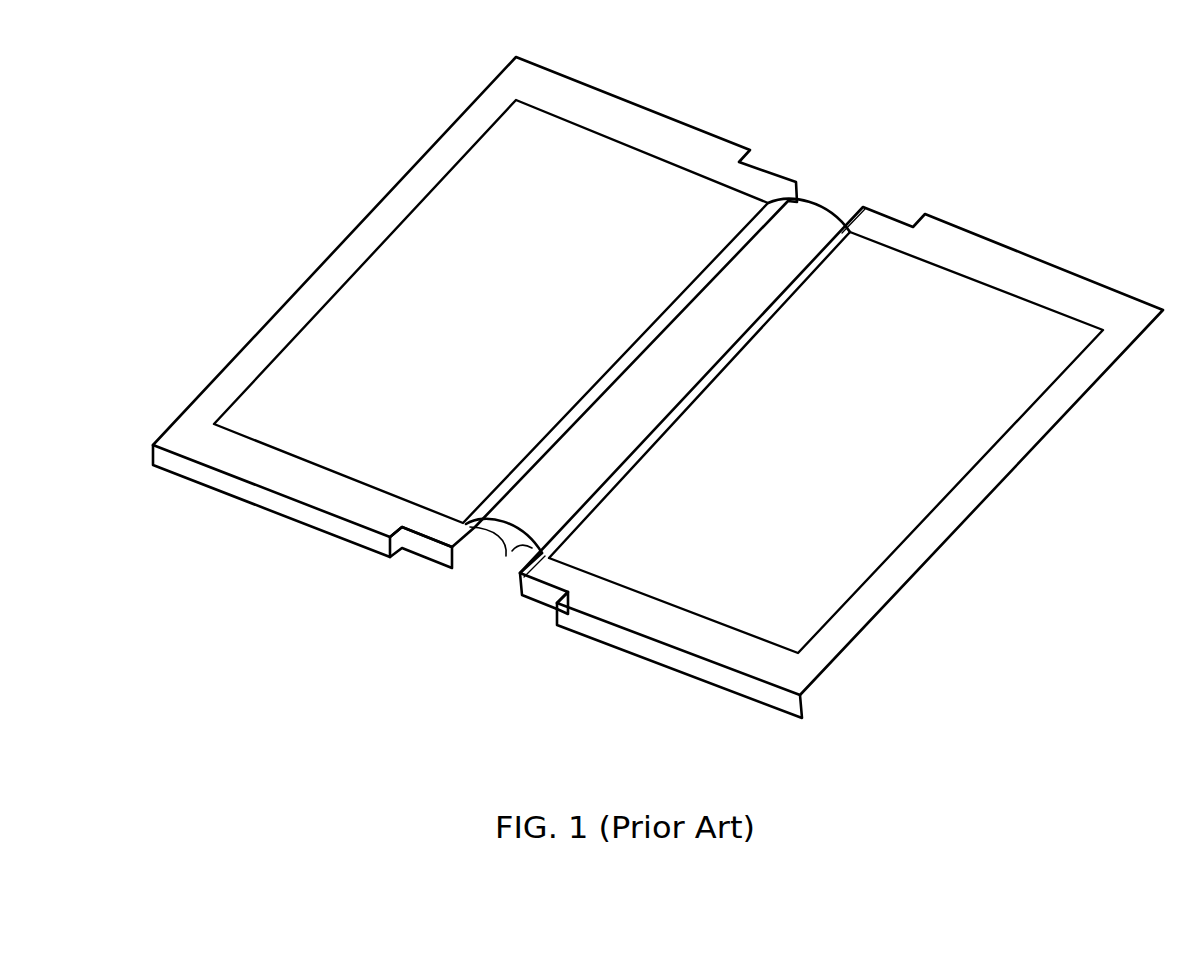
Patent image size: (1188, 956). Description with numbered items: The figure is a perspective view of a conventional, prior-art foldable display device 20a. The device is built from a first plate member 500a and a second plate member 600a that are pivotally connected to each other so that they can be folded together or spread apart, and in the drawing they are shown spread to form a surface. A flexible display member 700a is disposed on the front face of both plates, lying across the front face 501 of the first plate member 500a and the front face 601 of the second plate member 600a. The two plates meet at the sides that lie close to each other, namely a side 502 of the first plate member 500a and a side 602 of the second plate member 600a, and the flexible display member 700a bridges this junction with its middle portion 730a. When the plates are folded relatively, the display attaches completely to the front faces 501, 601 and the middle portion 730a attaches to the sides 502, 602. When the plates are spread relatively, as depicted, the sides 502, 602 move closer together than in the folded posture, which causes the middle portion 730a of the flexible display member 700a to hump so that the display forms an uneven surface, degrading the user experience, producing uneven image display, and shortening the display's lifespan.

The foldable display device 20a is at (603, 738).
The first plate member 500a is at (353, 495).
The front face of the first plate member 501 is at (388, 515).
The side of the first plate member 502 is at (500, 537).
The second plate member 600a is at (670, 622).
The front face of the second plate member 601 is at (600, 606).
The side of the second plate member 602 is at (525, 547).
The flexible display member 700a is at (655, 185).
The middle portion of the flexible display member 730a is at (795, 230).